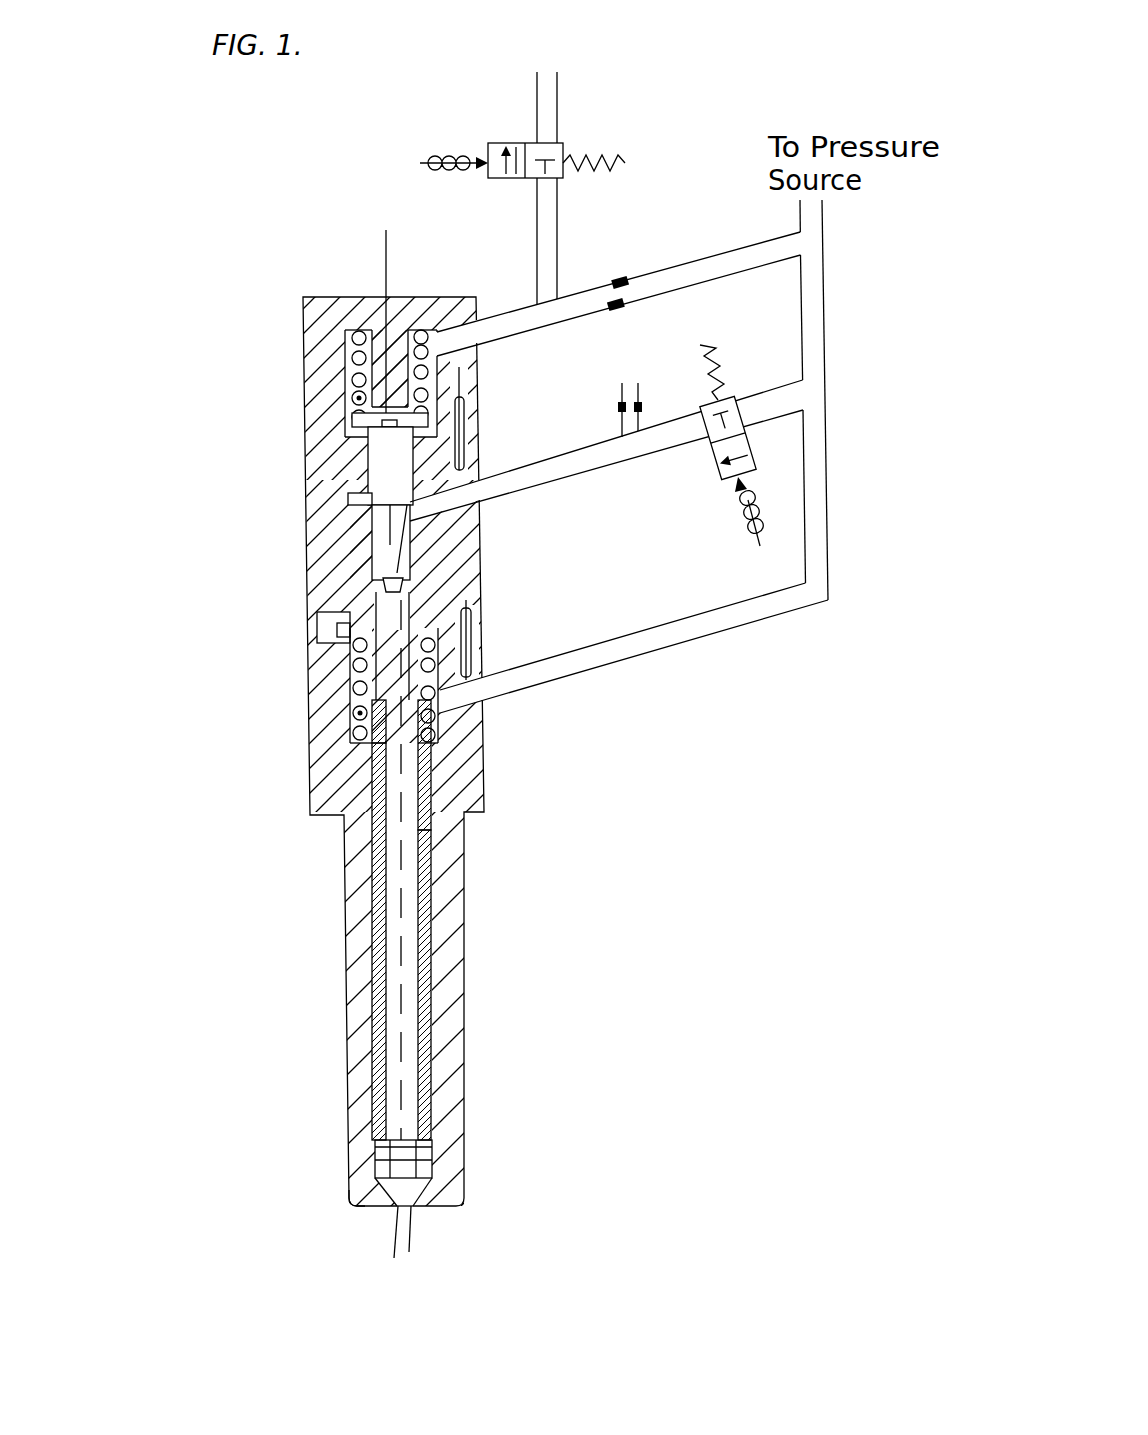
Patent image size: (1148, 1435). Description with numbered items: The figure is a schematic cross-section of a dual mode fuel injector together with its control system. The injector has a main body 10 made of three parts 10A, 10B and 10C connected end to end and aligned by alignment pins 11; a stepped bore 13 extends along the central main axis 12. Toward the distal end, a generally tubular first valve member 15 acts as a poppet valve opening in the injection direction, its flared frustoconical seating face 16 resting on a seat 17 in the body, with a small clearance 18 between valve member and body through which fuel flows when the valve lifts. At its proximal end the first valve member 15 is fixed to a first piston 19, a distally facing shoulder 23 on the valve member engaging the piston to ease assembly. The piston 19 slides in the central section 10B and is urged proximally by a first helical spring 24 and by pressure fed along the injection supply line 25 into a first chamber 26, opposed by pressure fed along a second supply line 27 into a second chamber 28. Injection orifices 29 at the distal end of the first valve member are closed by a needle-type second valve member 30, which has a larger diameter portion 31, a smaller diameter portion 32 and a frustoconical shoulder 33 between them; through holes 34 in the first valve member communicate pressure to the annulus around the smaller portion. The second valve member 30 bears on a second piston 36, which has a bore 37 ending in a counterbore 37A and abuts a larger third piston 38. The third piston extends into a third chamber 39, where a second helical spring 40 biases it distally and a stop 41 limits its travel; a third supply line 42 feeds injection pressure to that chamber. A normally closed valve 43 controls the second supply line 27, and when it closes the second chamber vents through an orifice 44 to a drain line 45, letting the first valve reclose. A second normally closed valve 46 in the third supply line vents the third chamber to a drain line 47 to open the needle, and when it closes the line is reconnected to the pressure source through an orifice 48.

The main body 10 is at (300, 822).
The body part 10A is at (360, 1042).
The central section of the body 10B is at (328, 558).
The body part 10C is at (325, 327).
The alignment pins 11 is at (461, 417).
The central main axis 12 is at (386, 258).
The stepped bore 13 is at (430, 803).
The first valve member 15 is at (423, 947).
The seating face 16 is at (511, 1151).
The seat 17 is at (461, 1269).
The clearance 18 is at (370, 1198).
The first piston 19 is at (362, 538).
The distally facing shoulder 23 is at (356, 632).
The first helical spring 24 is at (356, 714).
The injection supply line 25 is at (628, 643).
The first chamber 26 is at (360, 693).
The second supply line 27 is at (575, 462).
The second chamber 28 is at (357, 503).
The injection orifices 29 is at (394, 1260).
The second valve member 30 is at (407, 763).
The larger diameter portion 31 is at (406, 650).
The smaller diameter portion 32 is at (393, 903).
The frustoconical shoulder 33 is at (373, 727).
The through holes 34 is at (433, 1094).
The second piston 36 is at (383, 562).
The bore 37 is at (403, 542).
The counterbore 37A is at (386, 590).
The third piston 38 is at (381, 462).
The third chamber 39 is at (352, 370).
The second helical spring 40 is at (355, 397).
The stop 41 is at (396, 352).
The third supply line 42 is at (510, 313).
The normally closed valve 43 is at (716, 458).
The orifice 44 is at (617, 407).
The drain line 45 is at (620, 388).
The second normally closed valve 46 is at (490, 145).
The drain line 47 is at (557, 71).
The orifice 48 is at (623, 282).